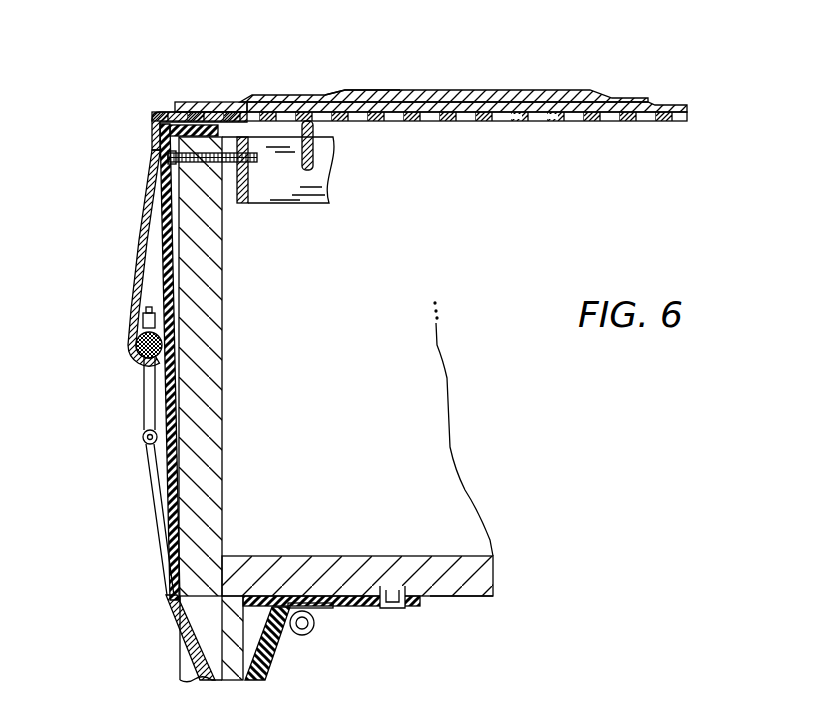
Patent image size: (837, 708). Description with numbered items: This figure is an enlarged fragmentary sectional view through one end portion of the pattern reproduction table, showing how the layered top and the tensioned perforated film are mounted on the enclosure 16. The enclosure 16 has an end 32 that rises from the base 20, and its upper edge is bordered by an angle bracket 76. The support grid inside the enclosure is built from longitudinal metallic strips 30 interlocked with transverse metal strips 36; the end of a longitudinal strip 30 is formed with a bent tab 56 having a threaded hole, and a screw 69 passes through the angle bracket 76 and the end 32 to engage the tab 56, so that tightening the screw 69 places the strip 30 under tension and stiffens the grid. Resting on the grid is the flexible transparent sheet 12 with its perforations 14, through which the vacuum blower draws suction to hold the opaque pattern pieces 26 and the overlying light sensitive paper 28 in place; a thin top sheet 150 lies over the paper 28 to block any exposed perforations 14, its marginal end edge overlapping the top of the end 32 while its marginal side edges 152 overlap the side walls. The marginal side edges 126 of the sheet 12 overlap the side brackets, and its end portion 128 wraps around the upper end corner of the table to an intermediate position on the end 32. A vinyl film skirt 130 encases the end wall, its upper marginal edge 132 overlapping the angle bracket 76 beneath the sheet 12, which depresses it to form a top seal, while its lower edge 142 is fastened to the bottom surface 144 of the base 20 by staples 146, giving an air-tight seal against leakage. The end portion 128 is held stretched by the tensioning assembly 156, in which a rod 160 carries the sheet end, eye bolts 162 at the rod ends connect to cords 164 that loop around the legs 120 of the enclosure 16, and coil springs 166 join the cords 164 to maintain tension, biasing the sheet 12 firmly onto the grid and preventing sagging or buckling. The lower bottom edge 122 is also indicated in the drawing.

The flexible transparent sheet 12 is at (463, 121).
The perforations 14 is at (510, 122).
The enclosure 16 is at (505, 575).
The base 20 is at (442, 561).
The pattern pieces 26 is at (480, 107).
The light sensitive paper 28 is at (430, 100).
The longitudinal metallic strips 30 is at (325, 192).
The end of enclosure 32 is at (213, 422).
The transverse metal strips 36 is at (313, 155).
The bent tabs 56 is at (243, 204).
The screws 69 is at (253, 158).
The angle brackets 76 is at (160, 146).
The legs 120 is at (207, 633).
The lower edge 122 is at (228, 678).
The marginal side edges 126 is at (650, 697).
The end portions of perforated sheet 128 is at (138, 237).
The vinyl plastic film skirt 130 is at (168, 300).
The upper marginal edge of skirt 132 is at (170, 110).
The lower edge of skirt 142 is at (417, 602).
The bottom surface of base 144 is at (478, 600).
The staples 146 is at (397, 610).
The top sheet 150 is at (360, 88).
The marginal side edges of top sheet 152 is at (202, 100).
The tensioning assembly 156 is at (136, 398).
The rod 160 is at (134, 347).
The eye bolts 162 is at (143, 413).
The cords 164 is at (148, 488).
The coil springs 166 is at (308, 635).